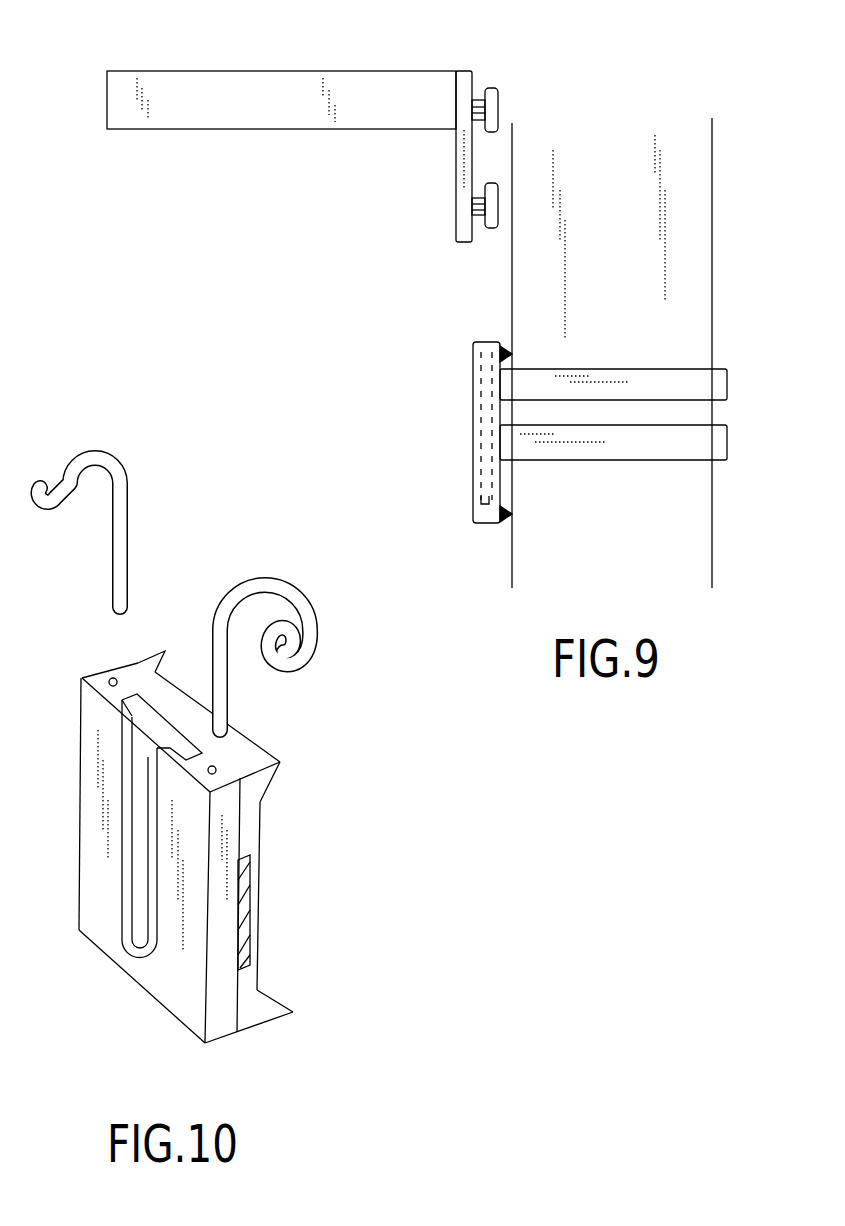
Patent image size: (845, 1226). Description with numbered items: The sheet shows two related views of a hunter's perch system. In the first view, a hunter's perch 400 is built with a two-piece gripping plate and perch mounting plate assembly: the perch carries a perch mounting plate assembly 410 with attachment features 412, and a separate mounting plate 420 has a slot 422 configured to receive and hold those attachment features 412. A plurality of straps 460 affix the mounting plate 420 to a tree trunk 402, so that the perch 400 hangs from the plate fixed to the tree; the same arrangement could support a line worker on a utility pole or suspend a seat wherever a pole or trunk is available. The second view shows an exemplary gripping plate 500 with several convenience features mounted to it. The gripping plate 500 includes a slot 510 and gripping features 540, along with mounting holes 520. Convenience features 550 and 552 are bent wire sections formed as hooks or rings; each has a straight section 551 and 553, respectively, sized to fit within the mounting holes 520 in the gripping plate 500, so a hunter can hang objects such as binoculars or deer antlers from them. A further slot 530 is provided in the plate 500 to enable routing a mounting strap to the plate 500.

In FIG. 9, the hunter's perch 400 is at (210, 70).
In FIG. 9, the tree trunk 402 is at (693, 338).
In FIG. 9, the perch mounting plate assembly 410 is at (473, 72).
In FIG. 9, the attachment features 412 is at (492, 183).
In FIG. 9, the mounting plate 420 is at (472, 410).
In FIG. 9, the slot 422 is at (500, 350).
In FIG. 9, the straps 460 is at (727, 437).
In FIG. 10, the gripping plate 500 is at (90, 828).
In FIG. 10, the slot 510 is at (143, 838).
In FIG. 10, the mounting holes 520 is at (113, 678).
In FIG. 10, the slot 530 is at (240, 923).
In FIG. 10, the gripping features 540 is at (288, 766).
In FIG. 10, the convenience feature 550 is at (258, 580).
In FIG. 10, the straight section 551 is at (216, 665).
In FIG. 10, the convenience feature 552 is at (97, 445).
In FIG. 10, the straight section 553 is at (130, 535).